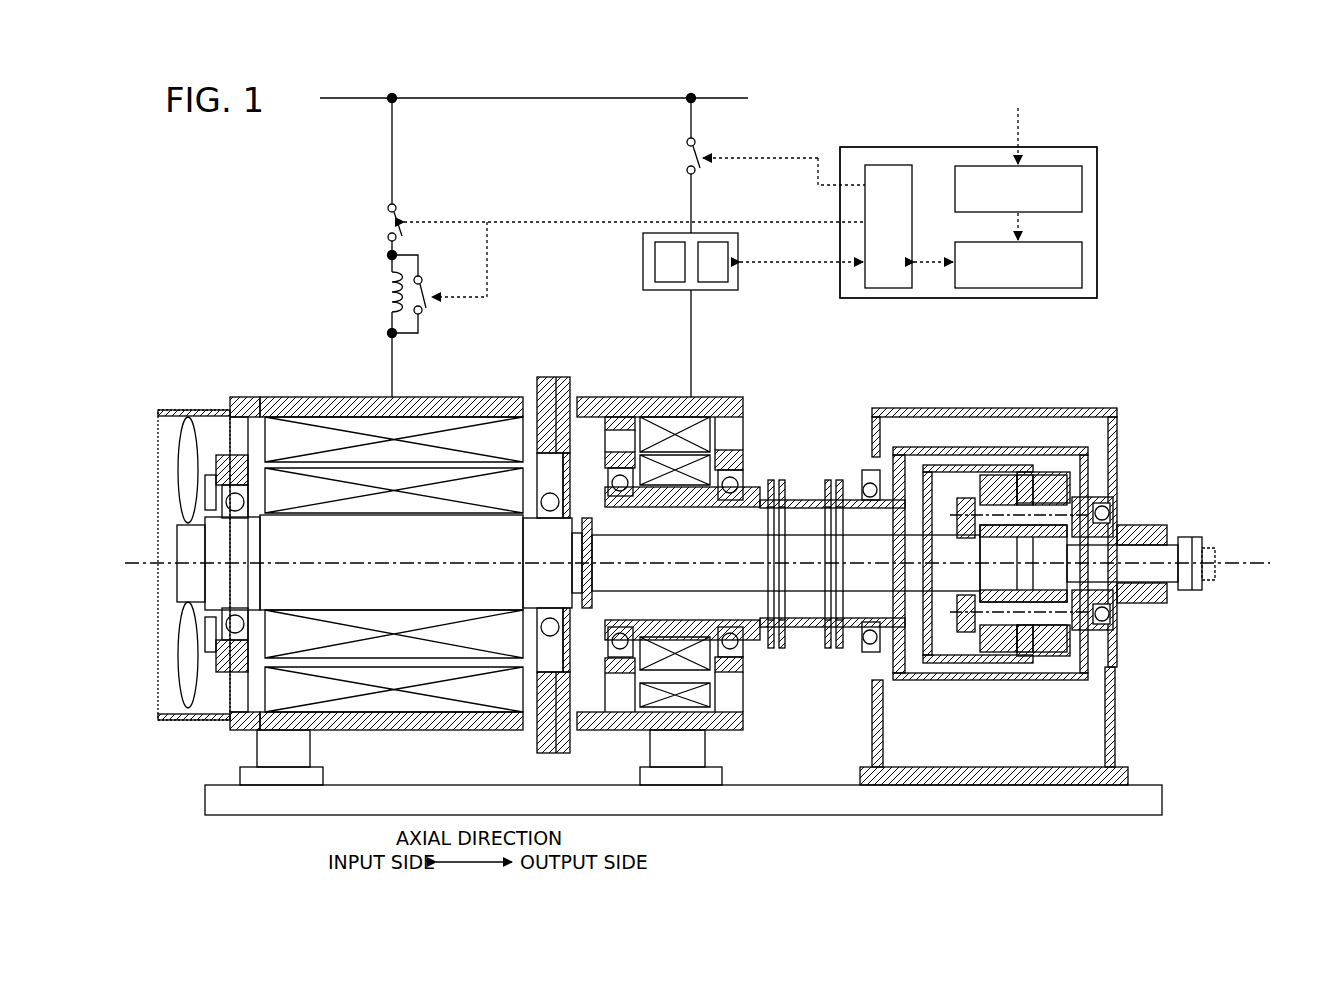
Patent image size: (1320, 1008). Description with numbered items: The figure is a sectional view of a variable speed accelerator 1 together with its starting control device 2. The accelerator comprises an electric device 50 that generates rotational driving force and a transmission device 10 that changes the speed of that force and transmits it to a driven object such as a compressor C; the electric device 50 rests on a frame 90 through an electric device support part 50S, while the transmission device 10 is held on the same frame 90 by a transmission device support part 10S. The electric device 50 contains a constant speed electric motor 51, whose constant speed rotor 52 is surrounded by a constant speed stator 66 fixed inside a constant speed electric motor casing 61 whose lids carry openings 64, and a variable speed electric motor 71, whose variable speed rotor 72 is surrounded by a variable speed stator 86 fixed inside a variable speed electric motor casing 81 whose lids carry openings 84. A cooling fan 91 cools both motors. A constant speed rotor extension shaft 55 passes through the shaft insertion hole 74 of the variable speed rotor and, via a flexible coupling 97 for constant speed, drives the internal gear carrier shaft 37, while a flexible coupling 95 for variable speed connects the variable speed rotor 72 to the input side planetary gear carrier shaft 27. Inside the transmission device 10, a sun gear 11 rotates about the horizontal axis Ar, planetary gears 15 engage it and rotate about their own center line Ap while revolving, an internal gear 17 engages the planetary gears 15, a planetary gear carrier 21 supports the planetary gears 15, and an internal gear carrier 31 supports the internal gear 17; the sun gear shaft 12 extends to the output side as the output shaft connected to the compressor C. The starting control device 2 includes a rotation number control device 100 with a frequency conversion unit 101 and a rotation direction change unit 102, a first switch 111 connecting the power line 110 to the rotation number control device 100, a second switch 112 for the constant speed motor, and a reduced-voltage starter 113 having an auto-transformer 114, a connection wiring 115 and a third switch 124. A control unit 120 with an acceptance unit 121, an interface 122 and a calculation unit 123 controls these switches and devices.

The variable speed accelerator 1 is at (1183, 136).
The starting control device 2 is at (940, 122).
The transmission device 10 is at (1081, 591).
The transmission device support part 10S is at (1112, 735).
The sun gear 11 is at (1060, 570).
The sun gear shaft 12 is at (1170, 575).
The planetary gears 15 is at (1100, 520).
The internal gear 17 is at (1049, 478).
The planetary gear carrier 21 is at (1077, 455).
The input side planetary gear carrier shaft 27 is at (888, 537).
The internal gear carrier 31 is at (978, 655).
The internal gear carrier shaft 37 is at (896, 580).
The electric device 50 is at (375, 534).
The electric device support part 50S is at (300, 745).
The constant speed electric motor 51 is at (270, 390).
The constant speed rotor 52 is at (484, 530).
The constant speed rotor extension shaft 55 is at (742, 545).
The constant speed electric motor casing 61 is at (430, 405).
The openings 64 is at (232, 428).
The constant speed stator 66 is at (330, 430).
The variable speed electric motor 71 is at (742, 392).
The variable speed rotor 72 is at (680, 640).
The shaft insertion hole 74 is at (608, 500).
The variable speed electric motor casing 81 is at (600, 728).
The openings 84 is at (620, 430).
The variable speed stator 86 is at (650, 700).
The frame 90 is at (1160, 803).
The cooling fan 91 is at (190, 695).
The flexible coupling for variable speed 95 is at (800, 505).
The flexible coupling for constant speed 97 is at (808, 580).
The rotation number control device 100 is at (751, 247).
The frequency conversion unit 101 is at (670, 241).
The rotation direction change unit 102 is at (712, 241).
The power line 110 is at (551, 100).
The first switch 111 is at (708, 148).
The second switch 112 is at (404, 217).
The reduced-voltage starter 113 is at (570, 245).
The auto-transformer 114 is at (390, 286).
The connection wiring 115 is at (420, 256).
The control unit 120 is at (1075, 145).
The acceptance unit 121 is at (1084, 185).
The interface 122 is at (902, 163).
The calculation unit 123 is at (1084, 262).
The third switch 124 is at (445, 295).
The center line of planetary gears Ap is at (1062, 515).
The axis Ar is at (1240, 563).
The compressor C is at (1195, 537).